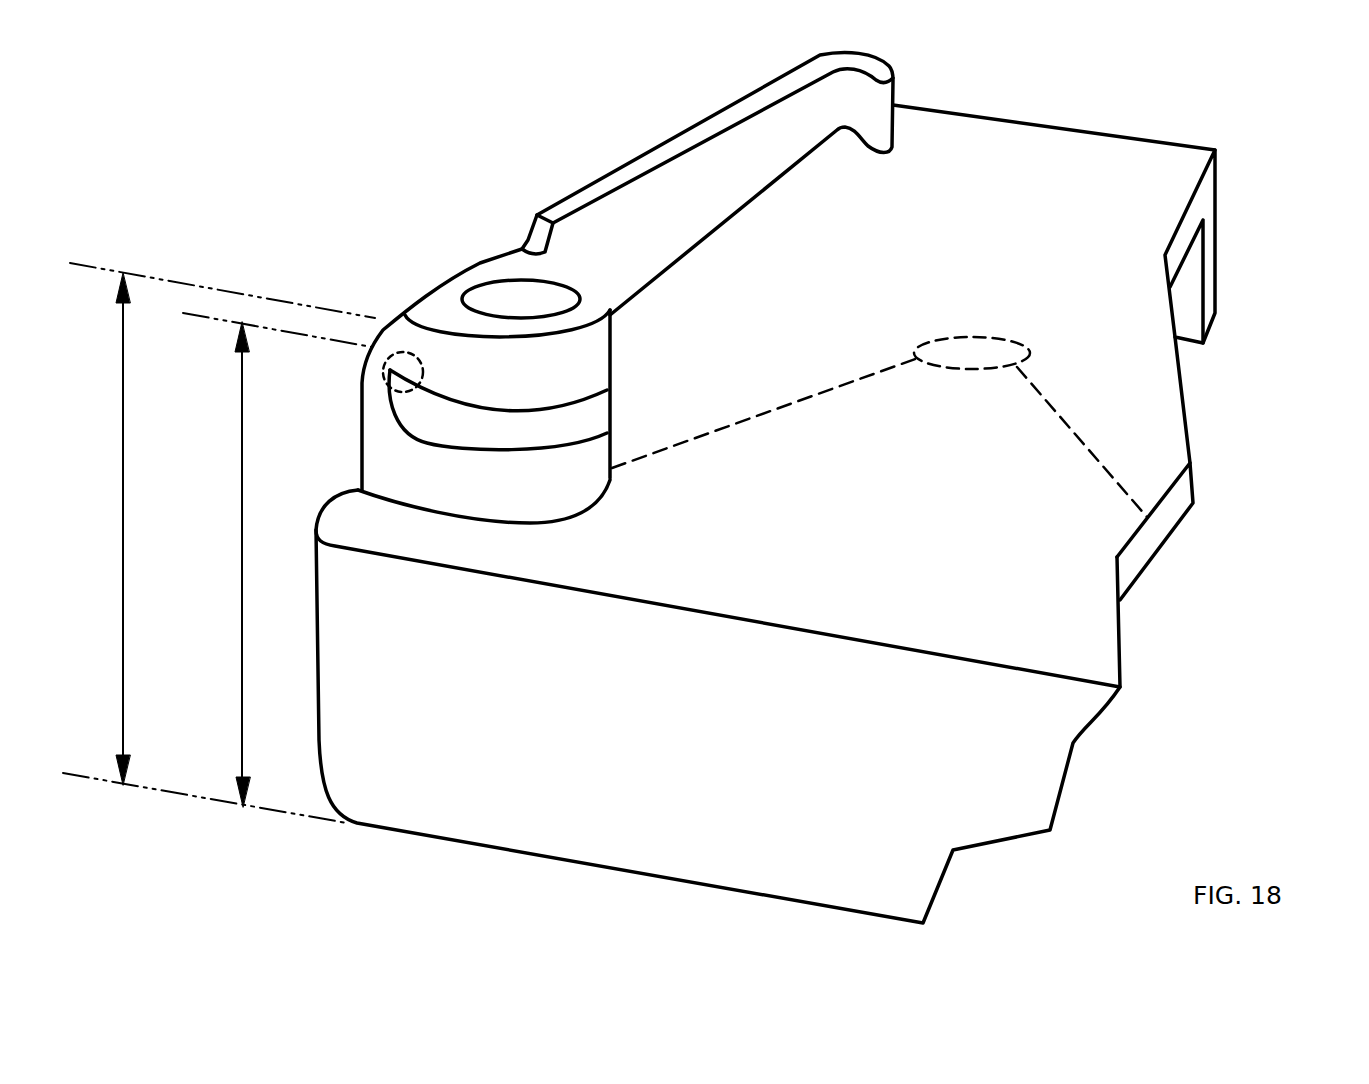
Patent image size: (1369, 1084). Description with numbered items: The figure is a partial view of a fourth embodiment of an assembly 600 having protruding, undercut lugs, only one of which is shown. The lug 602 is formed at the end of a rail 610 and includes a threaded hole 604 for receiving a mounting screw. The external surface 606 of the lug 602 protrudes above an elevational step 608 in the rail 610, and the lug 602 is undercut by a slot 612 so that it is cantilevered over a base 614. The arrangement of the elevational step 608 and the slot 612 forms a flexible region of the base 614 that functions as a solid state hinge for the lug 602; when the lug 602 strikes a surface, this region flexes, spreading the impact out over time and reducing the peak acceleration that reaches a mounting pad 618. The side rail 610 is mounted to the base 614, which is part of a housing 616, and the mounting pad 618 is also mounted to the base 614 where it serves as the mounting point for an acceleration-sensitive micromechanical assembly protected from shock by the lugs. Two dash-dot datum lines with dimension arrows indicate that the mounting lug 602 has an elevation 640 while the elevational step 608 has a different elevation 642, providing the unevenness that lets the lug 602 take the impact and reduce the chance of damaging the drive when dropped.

The assembly 600 is at (330, 124).
The lug 602 is at (558, 365).
The threaded hole 604 is at (517, 307).
The external surface 606 is at (447, 315).
The elevational step 608 is at (517, 257).
The rail 610 is at (603, 180).
The slot 612 is at (573, 423).
The base 614 is at (423, 358).
The housing 616 is at (1203, 245).
The mounting pad 618 is at (967, 337).
The elevation 640 is at (123, 445).
The elevation 642 is at (242, 445).